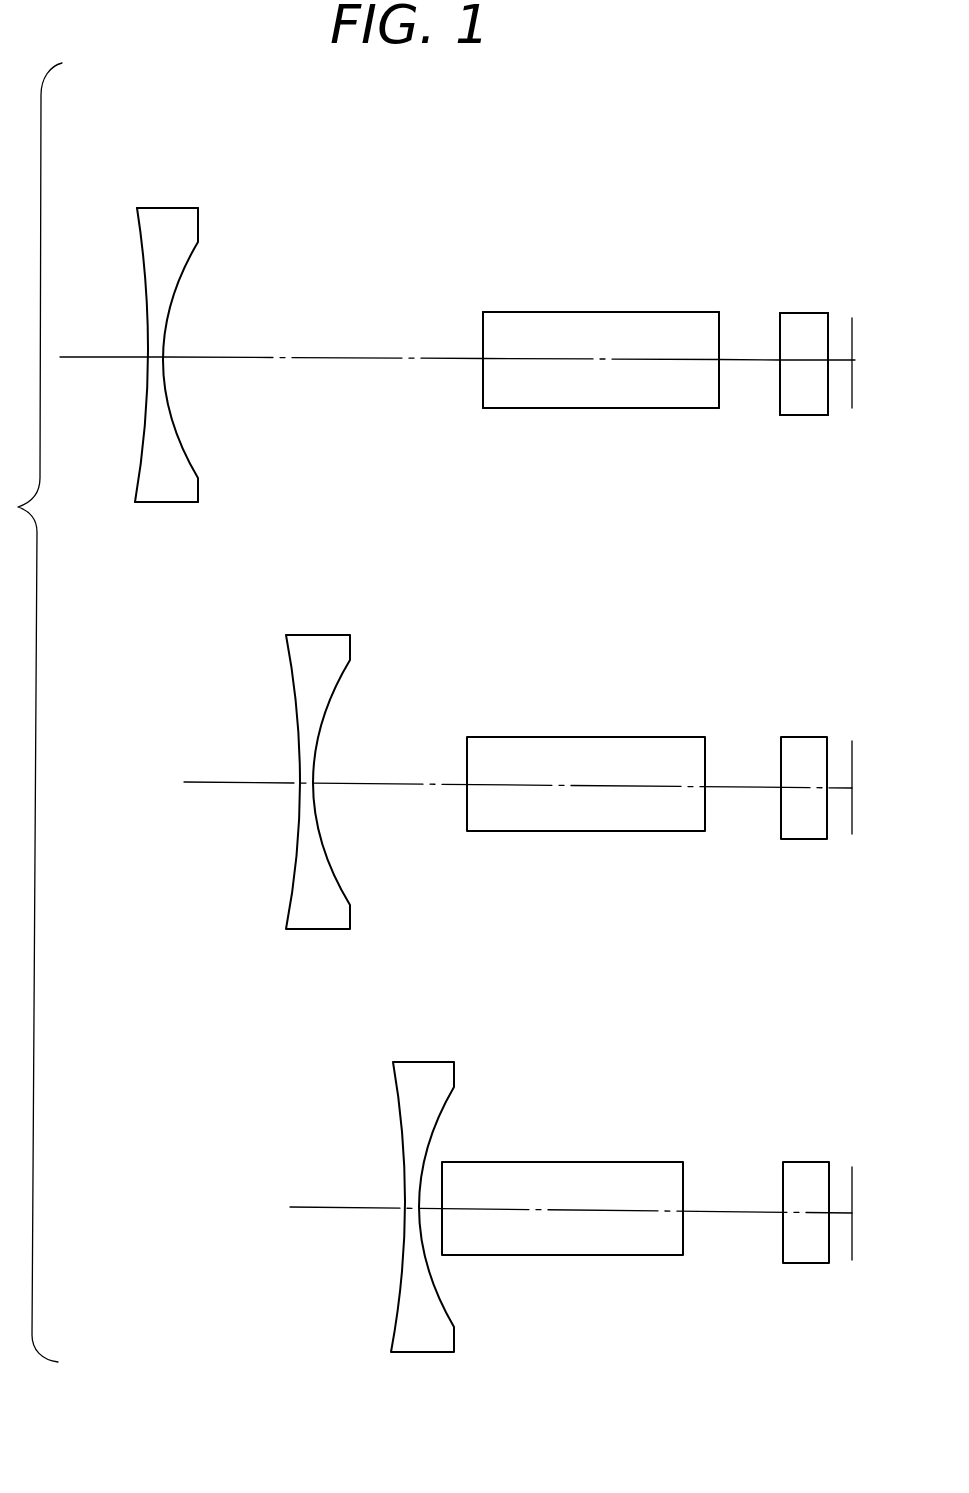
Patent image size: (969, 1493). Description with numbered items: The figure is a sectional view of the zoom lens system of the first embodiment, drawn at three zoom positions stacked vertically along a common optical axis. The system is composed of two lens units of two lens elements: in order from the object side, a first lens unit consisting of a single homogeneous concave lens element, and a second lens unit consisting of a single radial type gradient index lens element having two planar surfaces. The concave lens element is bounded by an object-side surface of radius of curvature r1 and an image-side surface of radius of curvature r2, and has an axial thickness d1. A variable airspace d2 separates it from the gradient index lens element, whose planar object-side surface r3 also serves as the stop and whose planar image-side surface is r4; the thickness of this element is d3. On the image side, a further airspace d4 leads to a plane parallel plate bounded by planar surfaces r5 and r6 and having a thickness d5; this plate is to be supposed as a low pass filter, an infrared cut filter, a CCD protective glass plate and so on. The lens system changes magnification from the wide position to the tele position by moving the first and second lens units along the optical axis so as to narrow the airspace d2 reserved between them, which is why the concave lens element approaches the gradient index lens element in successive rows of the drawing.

The radius of curvature of the object-side surface of the first lens element r1 is at (138, 233).
The radius of curvature of the image-side surface of the first lens element r2 is at (188, 255).
The radius of curvature of the object-side surface of the gradient index lens elemen r3 is at (483, 318).
The radius of curvature of the image-side surface of the gradient index lens element r4 is at (720, 330).
The radius of curvature of the object-side surface of the plane parallel plate r5 is at (780, 330).
The radius of curvature of the image-side surface of the plane parallel plate r6 is at (828, 327).
The thickness of the first lens element d1 is at (160, 358).
The variable airspace between the first and second lens units d2 is at (313, 358).
The thickness of the gradient index lens element d3 is at (592, 360).
The variable airspace between the gradient index lens element and the plane parallel d4 is at (743, 367).
The thickness of the plane parallel plate d5 is at (800, 363).